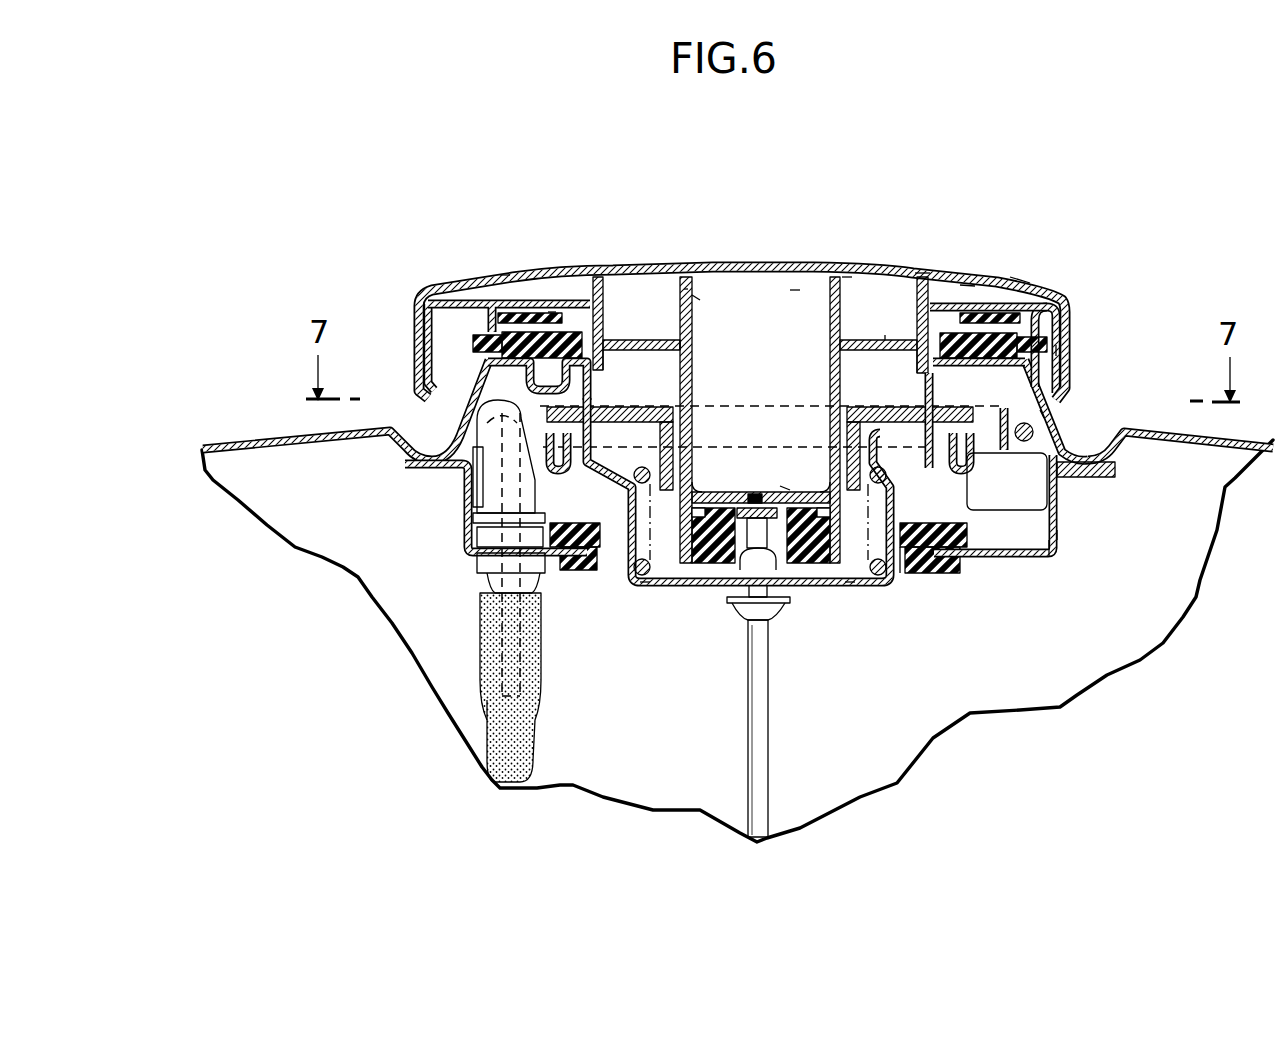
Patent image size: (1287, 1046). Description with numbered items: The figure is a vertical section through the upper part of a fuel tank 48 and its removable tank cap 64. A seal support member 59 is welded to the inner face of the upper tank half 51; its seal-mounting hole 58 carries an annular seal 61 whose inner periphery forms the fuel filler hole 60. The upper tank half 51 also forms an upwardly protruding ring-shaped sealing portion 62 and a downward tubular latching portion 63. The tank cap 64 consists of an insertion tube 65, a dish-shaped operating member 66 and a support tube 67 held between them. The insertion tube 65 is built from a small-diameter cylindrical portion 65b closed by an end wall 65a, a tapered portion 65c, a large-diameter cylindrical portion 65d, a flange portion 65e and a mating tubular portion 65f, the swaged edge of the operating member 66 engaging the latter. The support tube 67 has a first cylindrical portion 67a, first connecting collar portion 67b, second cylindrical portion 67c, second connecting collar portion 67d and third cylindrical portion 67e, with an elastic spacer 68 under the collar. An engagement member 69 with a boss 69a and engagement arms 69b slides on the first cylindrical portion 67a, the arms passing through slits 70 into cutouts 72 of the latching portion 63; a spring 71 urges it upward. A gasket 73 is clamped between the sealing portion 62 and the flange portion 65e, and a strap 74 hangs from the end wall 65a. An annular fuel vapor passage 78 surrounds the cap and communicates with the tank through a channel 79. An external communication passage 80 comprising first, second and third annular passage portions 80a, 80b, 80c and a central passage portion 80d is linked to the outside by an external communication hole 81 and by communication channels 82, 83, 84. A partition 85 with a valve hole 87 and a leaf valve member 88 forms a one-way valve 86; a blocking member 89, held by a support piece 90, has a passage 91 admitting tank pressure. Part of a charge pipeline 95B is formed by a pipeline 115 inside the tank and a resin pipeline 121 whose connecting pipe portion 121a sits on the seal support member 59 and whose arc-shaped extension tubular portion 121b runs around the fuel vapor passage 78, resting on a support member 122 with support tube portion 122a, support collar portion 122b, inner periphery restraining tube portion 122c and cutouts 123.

The fuel tank 48 is at (236, 430).
The upper tank half 51 is at (262, 434).
The seal-mounting hole 58 is at (905, 574).
The seal support member 59 is at (1060, 535).
The fuel filler hole 60 is at (850, 586).
The seal 61 is at (618, 585).
The sealing portion 62 is at (1062, 322).
The latching portion 63 is at (970, 466).
The tank cap 64 is at (1018, 270).
The insertion tube 65 is at (948, 505).
The end wall 65a is at (595, 572).
The small-diameter cylindrical portion 65b is at (965, 556).
The tapered portion 65c is at (586, 460).
The large-diameter cylindrical portion 65d is at (885, 340).
The flange portion 65e is at (985, 305).
The mating tubular portion 65f is at (1060, 352).
The operating member 66 is at (785, 266).
The support tube 67 is at (612, 292).
The first cylindrical portion 67a is at (792, 292).
The first connecting collar portion 67b is at (684, 347).
The second cylindrical portion 67c is at (605, 290).
The second connecting collar portion 67d is at (500, 300).
The third cylindrical portion 67e is at (455, 288).
The spacer 68 is at (552, 312).
The engagement member 69 is at (926, 487).
The boss 69a is at (718, 417).
The engagement arms 69b is at (474, 419).
The slits 70 is at (588, 393).
The spring 71 is at (608, 586).
The cutouts 72 is at (672, 296).
The gasket 73 is at (480, 334).
The strap 74 is at (762, 705).
The fuel vapor passage 78 is at (1058, 507).
The channel 79 is at (1100, 476).
The external communication passage 80 is at (776, 320).
The first annular passage portion 80a is at (1020, 278).
The second annular passage portion 80b is at (968, 285).
The third annular passage portion 80c is at (848, 278).
The central passage portion 80d is at (706, 300).
The external communication hole 81 is at (440, 286).
The communication channel 82 is at (503, 272).
The communication channel 83 is at (922, 275).
The communication channel 84 is at (687, 290).
The partition 85 is at (712, 492).
The one-way valve 86 is at (791, 478).
The valve hole 87 is at (757, 494).
The leaf valve member 88 is at (738, 545).
The blocking member 89 is at (712, 563).
The support piece 90 is at (797, 566).
The passage 91 is at (770, 606).
The charge pipeline 95B is at (470, 713).
The pipeline 115 is at (518, 735).
The pipeline 121 is at (375, 474).
The connecting pipe portion 121a is at (490, 546).
The extension tubular portion 121b is at (497, 481).
The support member 122 is at (1066, 452).
The support tube portion 122a is at (1050, 556).
The support collar portion 122b is at (1050, 428).
The inner periphery restraining tube portion 122c is at (1042, 412).
The cutouts 123 is at (470, 380).